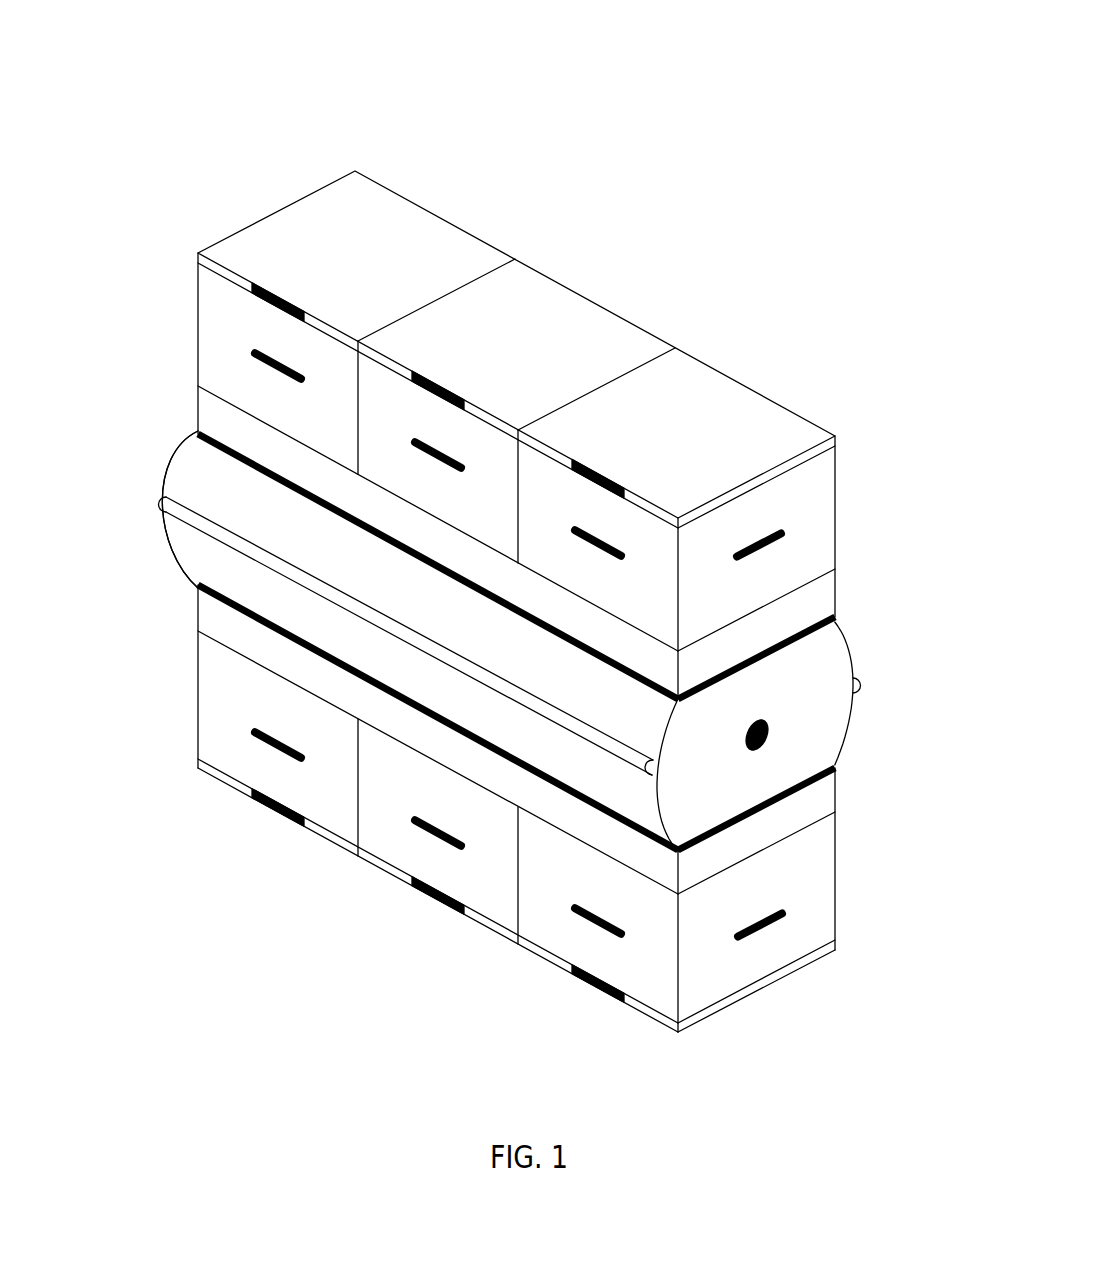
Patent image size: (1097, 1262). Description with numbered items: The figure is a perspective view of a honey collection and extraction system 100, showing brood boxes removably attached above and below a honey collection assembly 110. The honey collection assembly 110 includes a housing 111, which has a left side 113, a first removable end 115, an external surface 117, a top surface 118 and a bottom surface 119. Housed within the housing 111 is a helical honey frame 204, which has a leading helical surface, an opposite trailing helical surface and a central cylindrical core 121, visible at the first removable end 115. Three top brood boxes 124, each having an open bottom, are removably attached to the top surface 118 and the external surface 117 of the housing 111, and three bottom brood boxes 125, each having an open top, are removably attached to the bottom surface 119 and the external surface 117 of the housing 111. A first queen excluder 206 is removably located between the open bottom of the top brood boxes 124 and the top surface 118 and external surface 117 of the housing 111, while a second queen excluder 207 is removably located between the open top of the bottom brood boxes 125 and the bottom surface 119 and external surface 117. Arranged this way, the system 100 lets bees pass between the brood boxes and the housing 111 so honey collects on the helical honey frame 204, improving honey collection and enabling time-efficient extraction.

The honey collection and extraction system 100 is at (806, 72).
The honey collection assembly 110 is at (843, 133).
The housing 111 is at (499, 643).
The left side 113 is at (652, 804).
The first removable end 115 is at (841, 655).
The external surface 117 is at (164, 530).
The top surface 118 is at (185, 421).
The bottom surface 119 is at (185, 572).
The central cylindrical core 121 is at (787, 727).
The top brood box 124 is at (732, 384).
The bottom brood box 125 is at (390, 859).
The helical honey frame 204 is at (167, 483).
The first queen excluder 206 is at (850, 605).
The second queen excluder 207 is at (833, 790).